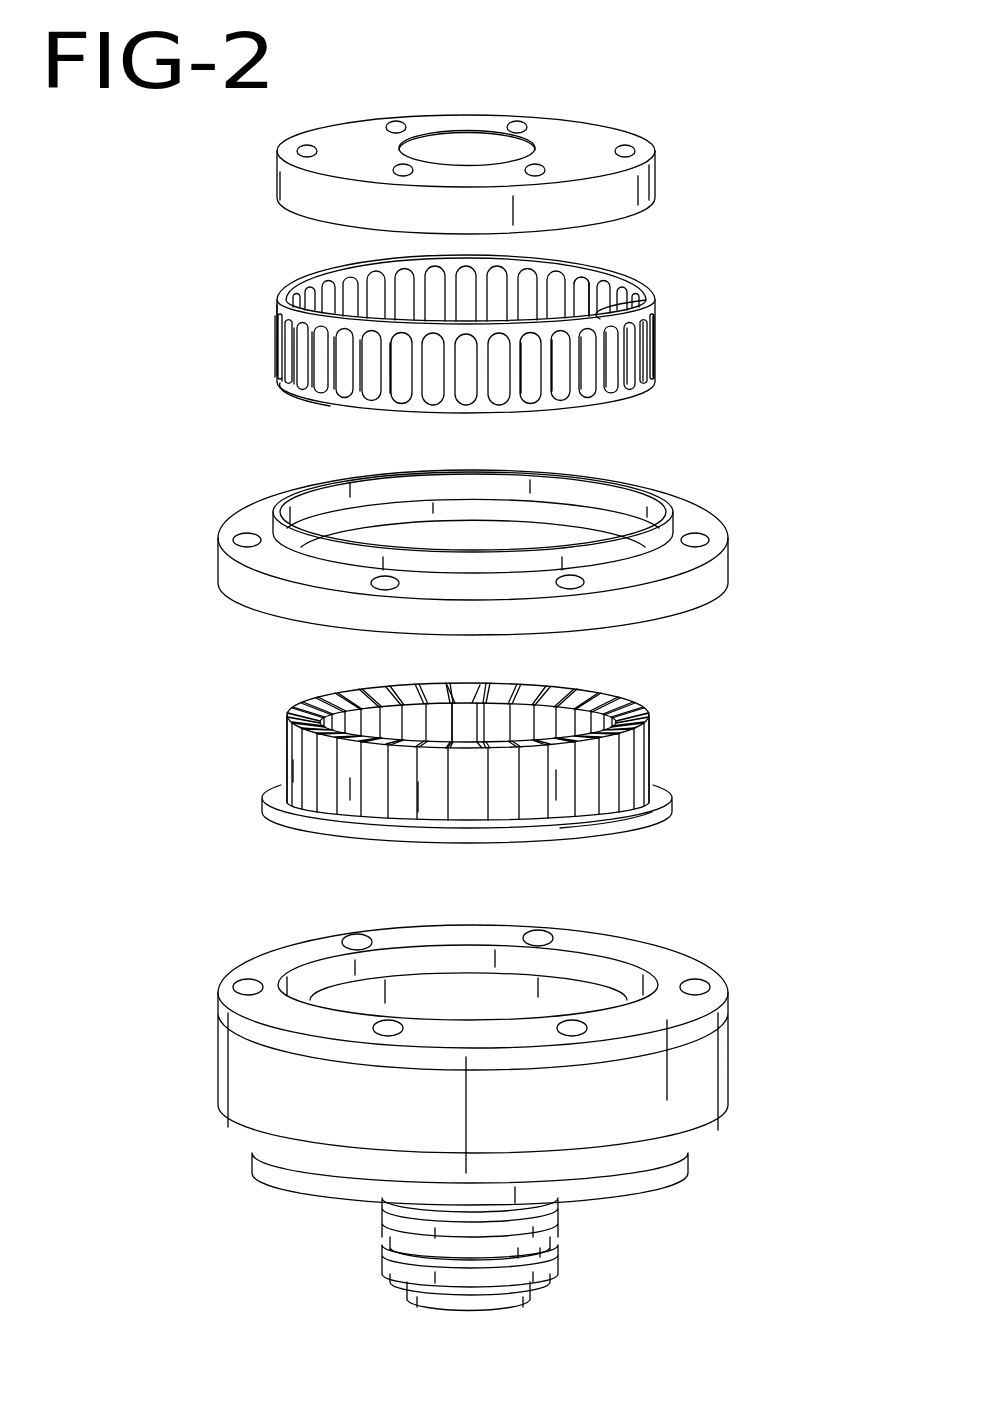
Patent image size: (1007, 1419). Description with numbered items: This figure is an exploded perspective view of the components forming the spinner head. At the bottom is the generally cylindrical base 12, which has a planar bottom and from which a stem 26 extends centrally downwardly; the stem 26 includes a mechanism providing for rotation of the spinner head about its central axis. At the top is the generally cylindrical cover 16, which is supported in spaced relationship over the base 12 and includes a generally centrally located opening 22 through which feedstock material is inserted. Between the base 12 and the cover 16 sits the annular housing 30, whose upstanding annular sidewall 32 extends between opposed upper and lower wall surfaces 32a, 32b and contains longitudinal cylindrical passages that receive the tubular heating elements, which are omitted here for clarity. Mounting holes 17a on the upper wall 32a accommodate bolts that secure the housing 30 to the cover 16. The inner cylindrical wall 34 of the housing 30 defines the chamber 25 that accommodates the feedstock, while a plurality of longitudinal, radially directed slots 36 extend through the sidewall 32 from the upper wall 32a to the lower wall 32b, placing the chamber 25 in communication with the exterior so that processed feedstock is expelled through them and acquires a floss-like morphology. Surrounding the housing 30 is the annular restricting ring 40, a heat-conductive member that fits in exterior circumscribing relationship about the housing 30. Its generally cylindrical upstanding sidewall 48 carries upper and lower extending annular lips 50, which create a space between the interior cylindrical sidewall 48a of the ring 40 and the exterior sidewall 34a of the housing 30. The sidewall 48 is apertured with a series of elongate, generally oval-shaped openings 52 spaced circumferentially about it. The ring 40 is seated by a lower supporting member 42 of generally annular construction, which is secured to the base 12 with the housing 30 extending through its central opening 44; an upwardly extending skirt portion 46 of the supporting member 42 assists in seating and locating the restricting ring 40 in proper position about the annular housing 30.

The base 12 is at (713, 1067).
The cover 16 is at (658, 178).
The mounting holes 17a is at (413, 690).
The opening 22 is at (472, 147).
The chamber 25 is at (293, 778).
The stem 26 is at (547, 1270).
The annular housing 30 is at (643, 778).
The annular sidewall 32 is at (300, 779).
The upper wall surface 32a is at (467, 692).
The lower wall surface 32b is at (645, 818).
The inner cylindrical wall 34 is at (488, 718).
The exterior sidewall 34a is at (350, 797).
The slots 36 is at (547, 795).
The restricting ring 40 is at (655, 321).
The supporting member 42 is at (718, 577).
The central opening 44 is at (388, 534).
The skirt portion 46 is at (668, 538).
The sidewall 48 is at (282, 328).
The interior cylindrical sidewall 48a is at (580, 288).
The annular lips 50 is at (655, 304).
The openings 52 is at (373, 298).